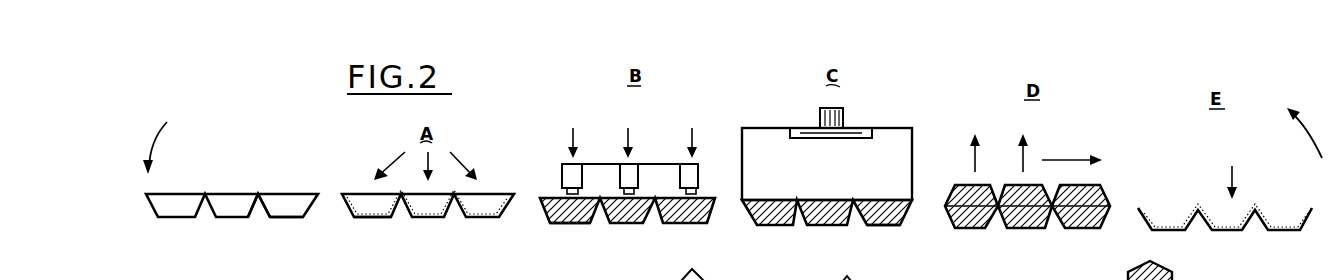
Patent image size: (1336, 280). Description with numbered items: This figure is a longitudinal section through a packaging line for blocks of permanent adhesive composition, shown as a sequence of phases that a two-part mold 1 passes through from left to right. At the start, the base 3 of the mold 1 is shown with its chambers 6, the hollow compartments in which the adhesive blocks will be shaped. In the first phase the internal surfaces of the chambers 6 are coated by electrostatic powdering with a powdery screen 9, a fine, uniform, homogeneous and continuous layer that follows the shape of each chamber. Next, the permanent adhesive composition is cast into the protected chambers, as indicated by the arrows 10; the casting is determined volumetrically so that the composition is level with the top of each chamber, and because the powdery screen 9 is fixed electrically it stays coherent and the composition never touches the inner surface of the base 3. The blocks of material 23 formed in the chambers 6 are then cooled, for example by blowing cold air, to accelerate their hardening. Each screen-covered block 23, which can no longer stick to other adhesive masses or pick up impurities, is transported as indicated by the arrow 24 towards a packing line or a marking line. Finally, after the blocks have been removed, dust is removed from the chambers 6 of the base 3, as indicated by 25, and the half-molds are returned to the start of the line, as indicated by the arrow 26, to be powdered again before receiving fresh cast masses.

The mold 1 is at (190, 226).
The base 3 is at (291, 220).
The chamber 6 is at (238, 212).
The powdery screen 9 is at (490, 220).
The arrows indicating casting 10 is at (577, 134).
The block of material 23 is at (585, 212).
The arrow indicating transport 24 is at (1078, 152).
The dust removal 25 is at (1225, 193).
The arrow indicating return of half-molds 26 is at (160, 140).